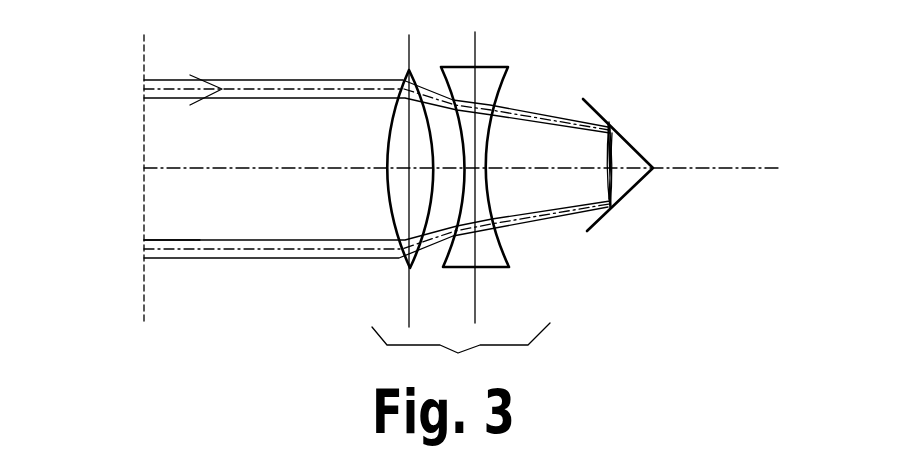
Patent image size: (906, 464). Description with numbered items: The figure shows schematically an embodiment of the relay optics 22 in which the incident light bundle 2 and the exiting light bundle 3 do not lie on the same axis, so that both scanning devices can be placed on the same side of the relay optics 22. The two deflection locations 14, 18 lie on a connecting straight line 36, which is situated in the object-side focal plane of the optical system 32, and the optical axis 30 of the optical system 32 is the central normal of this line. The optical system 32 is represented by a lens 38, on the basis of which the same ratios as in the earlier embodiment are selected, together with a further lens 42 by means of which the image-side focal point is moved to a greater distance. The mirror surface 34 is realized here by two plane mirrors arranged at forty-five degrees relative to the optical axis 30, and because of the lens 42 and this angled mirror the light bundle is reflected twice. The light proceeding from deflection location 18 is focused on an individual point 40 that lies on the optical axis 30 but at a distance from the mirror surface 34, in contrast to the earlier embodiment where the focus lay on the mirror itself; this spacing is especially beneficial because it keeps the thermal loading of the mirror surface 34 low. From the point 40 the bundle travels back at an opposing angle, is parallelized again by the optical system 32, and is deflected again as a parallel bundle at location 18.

The incident light bundle 2 is at (283, 84).
The exiting light bundle 3 is at (262, 249).
The deflection location 14 is at (134, 89).
The deflection location 18 is at (138, 248).
The relay optics 22 is at (613, 48).
The optical axis 30 is at (707, 167).
The optical system 32 is at (461, 358).
The mirror surface 34 is at (625, 195).
The connecting straight line 36 is at (140, 168).
The lens 38 is at (397, 200).
The individual point 40 is at (614, 167).
The lens 42 is at (480, 193).